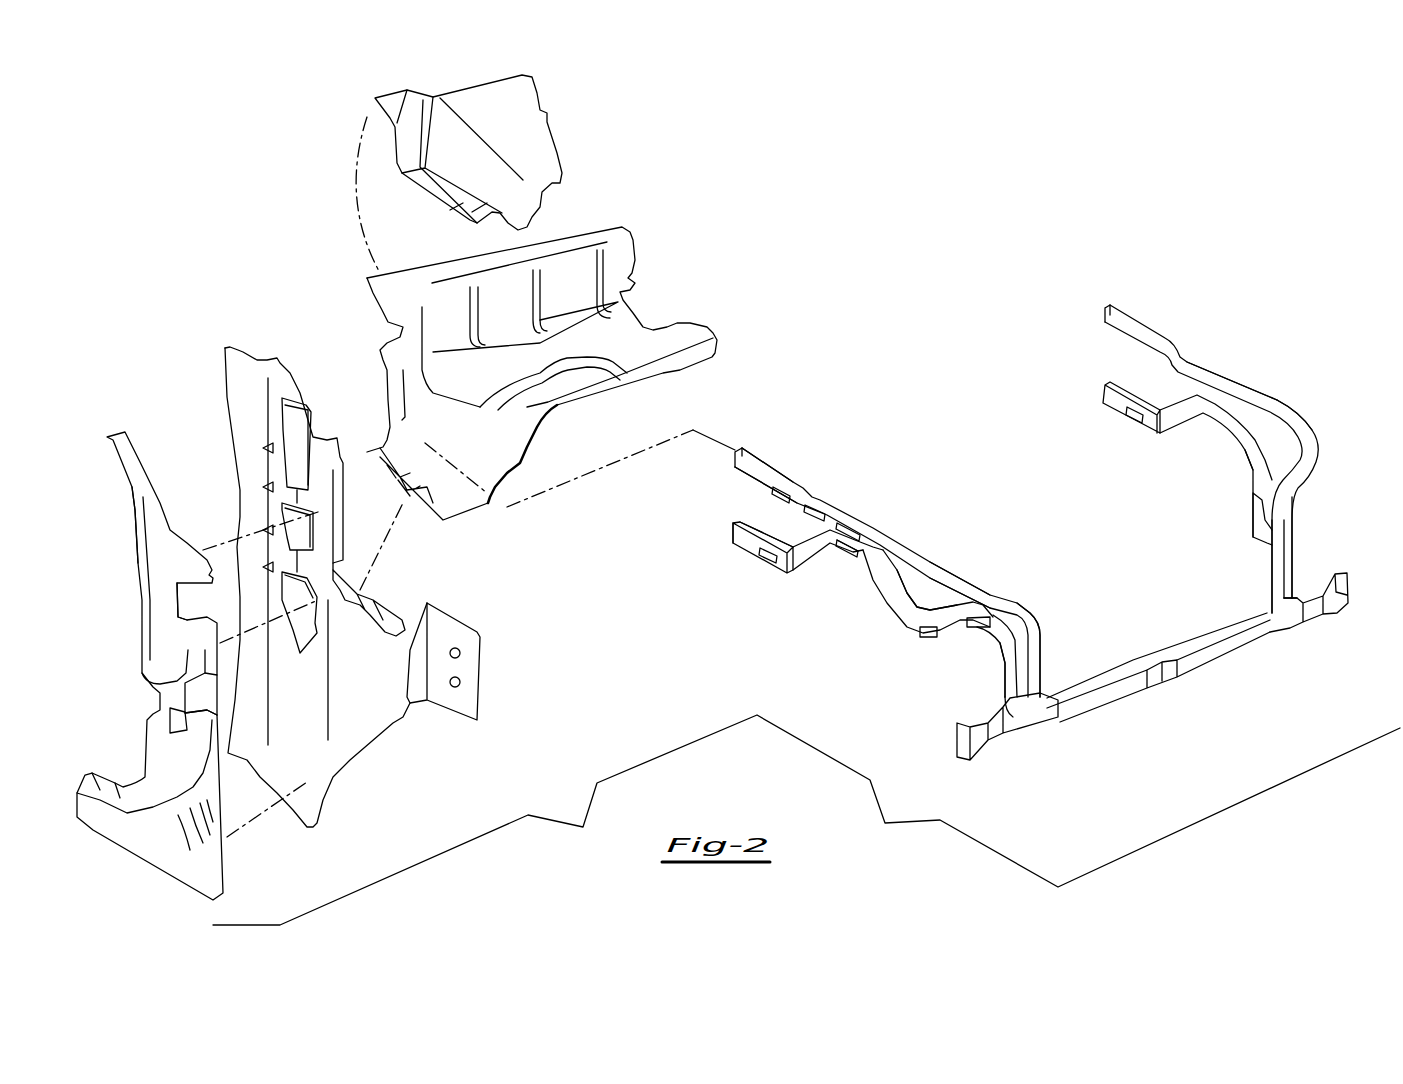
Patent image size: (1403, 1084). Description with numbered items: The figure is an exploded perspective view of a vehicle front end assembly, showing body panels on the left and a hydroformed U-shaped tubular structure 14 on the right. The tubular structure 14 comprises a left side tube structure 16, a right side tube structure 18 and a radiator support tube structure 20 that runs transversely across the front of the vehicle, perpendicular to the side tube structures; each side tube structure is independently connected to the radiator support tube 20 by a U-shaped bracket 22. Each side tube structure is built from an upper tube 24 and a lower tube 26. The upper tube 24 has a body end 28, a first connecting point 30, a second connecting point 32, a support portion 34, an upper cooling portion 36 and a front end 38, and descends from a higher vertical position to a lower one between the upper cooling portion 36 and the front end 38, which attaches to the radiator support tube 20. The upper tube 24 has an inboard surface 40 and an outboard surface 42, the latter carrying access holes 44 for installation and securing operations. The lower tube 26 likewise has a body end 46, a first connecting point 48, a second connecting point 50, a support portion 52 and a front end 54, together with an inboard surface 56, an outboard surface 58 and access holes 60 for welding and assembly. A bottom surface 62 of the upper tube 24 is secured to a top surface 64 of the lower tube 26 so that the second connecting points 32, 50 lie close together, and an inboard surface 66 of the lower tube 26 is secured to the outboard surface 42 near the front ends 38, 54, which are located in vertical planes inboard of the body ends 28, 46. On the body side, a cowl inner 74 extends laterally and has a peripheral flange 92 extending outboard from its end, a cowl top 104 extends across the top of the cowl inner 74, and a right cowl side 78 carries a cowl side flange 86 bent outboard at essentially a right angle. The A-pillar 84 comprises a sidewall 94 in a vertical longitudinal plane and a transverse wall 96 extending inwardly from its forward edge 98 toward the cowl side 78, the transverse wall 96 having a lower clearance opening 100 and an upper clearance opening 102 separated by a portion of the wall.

The U-shaped tubular structure 14 is at (1078, 512).
The left side tube structure 16 is at (1222, 326).
The right side tube structure 18 is at (716, 565).
The radiator support tube structure 20 is at (1200, 665).
The U-shaped bracket 22 is at (1030, 723).
The upper tube 24 is at (778, 470).
The lower tube 26 is at (748, 526).
The body end 28 is at (740, 455).
The first connecting point 30 is at (820, 497).
The second connecting point 32 is at (855, 517).
The support portion 34 is at (935, 562).
The upper cooling portion 36 is at (1010, 600).
The front end 38 is at (1272, 598).
The inboard surface 40 is at (1197, 388).
The outboard surface 42 is at (873, 547).
The access holes 44 is at (773, 493).
The body end 46 is at (733, 533).
The first connecting point 48 is at (765, 540).
The second connecting point 50 is at (842, 548).
The support portion 52 is at (902, 615).
The front end 54 is at (1001, 700).
The inboard surface 56 is at (1258, 463).
The outboard surface 58 is at (1003, 642).
The access holes 60 is at (758, 557).
The bottom surface 62 is at (1102, 336).
The top surface 64 is at (1253, 497).
The inboard surface 66 is at (1157, 426).
The cowl inner structure 74 is at (510, 373).
The right cowl side 78 is at (352, 587).
The A-pillar 84 is at (150, 630).
The cowl side flange 86 is at (353, 587).
The peripheral flange 92 is at (400, 462).
The sidewall 94 is at (145, 563).
The transverse wall 96 is at (193, 750).
The forward edge 98 is at (165, 668).
The lower clearance opening 100 is at (202, 699).
The upper clearance opening 102 is at (195, 601).
The cowl top 104 is at (553, 183).